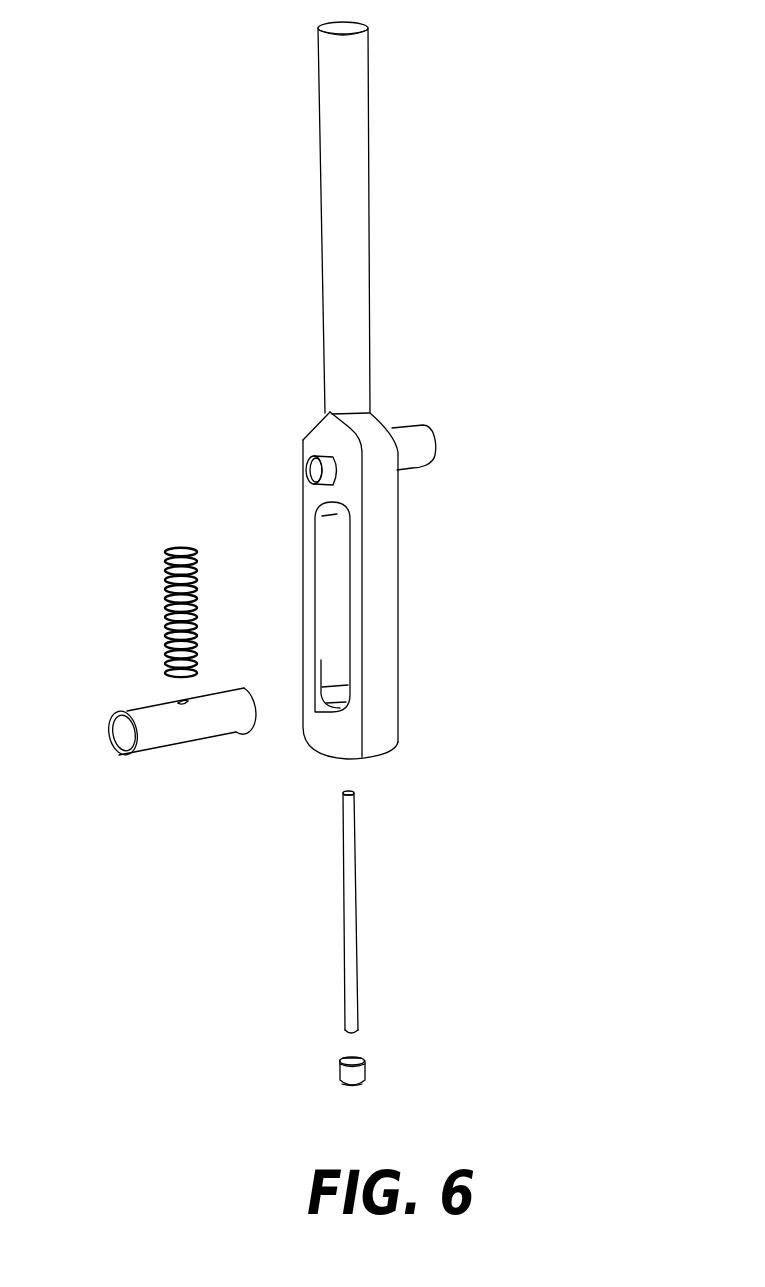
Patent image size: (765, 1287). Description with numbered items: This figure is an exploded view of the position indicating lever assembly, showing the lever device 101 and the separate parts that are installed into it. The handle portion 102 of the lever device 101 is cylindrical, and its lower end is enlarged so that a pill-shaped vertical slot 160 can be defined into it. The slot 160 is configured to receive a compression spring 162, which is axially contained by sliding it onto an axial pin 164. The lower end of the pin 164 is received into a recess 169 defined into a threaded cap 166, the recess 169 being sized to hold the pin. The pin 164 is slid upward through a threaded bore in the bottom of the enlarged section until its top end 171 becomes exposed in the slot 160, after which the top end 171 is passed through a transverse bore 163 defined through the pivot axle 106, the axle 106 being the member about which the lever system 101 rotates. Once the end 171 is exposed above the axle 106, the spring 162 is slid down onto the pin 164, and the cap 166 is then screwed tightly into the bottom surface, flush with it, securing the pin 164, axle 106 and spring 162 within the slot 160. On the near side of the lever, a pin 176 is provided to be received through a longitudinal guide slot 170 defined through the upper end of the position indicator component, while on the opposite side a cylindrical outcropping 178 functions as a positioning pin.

The lever device 101 is at (568, 226).
The handle portion 102 is at (360, 147).
The pivot axle 106 is at (128, 770).
The vertical slot 160 is at (333, 667).
The compression spring 162 is at (163, 602).
The transverse bore 163 is at (180, 698).
The axial pin 164 is at (355, 893).
The threaded cap 166 is at (365, 1070).
The recess 169 is at (347, 1058).
The longitudinal guide slot 170 is at (410, 545).
The top end 171 is at (348, 792).
The pin 176 is at (303, 440).
The cylindrical outcropping 178 is at (398, 435).